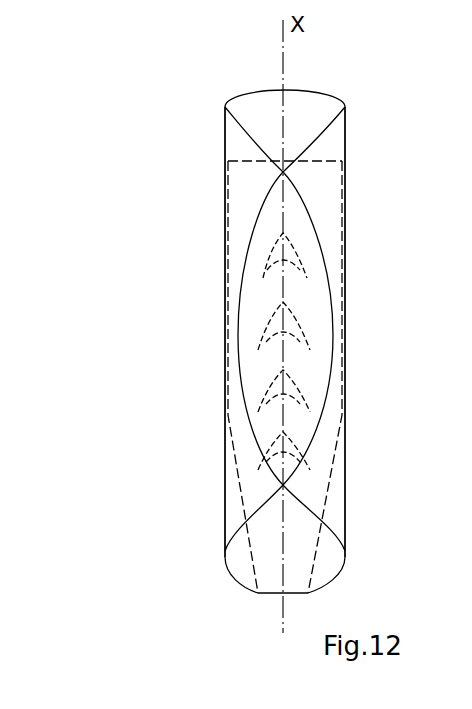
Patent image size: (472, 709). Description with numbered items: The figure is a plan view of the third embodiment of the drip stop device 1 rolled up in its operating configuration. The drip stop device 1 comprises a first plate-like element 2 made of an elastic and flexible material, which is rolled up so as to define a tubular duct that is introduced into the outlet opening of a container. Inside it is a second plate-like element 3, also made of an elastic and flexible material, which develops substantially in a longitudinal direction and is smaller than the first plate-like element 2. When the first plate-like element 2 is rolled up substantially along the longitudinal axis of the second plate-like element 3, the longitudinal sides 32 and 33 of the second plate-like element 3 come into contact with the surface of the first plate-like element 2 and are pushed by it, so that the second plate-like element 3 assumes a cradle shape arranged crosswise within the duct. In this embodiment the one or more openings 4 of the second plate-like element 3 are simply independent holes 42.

The drip stop device 1 is at (112, 78).
The first plate-like element 2 is at (243, 109).
The second plate-like element 3 is at (268, 553).
The openings 4 is at (262, 252).
The holes 42 is at (295, 327).
The longitudinal side 32 is at (226, 353).
The longitudinal side 33 is at (345, 352).